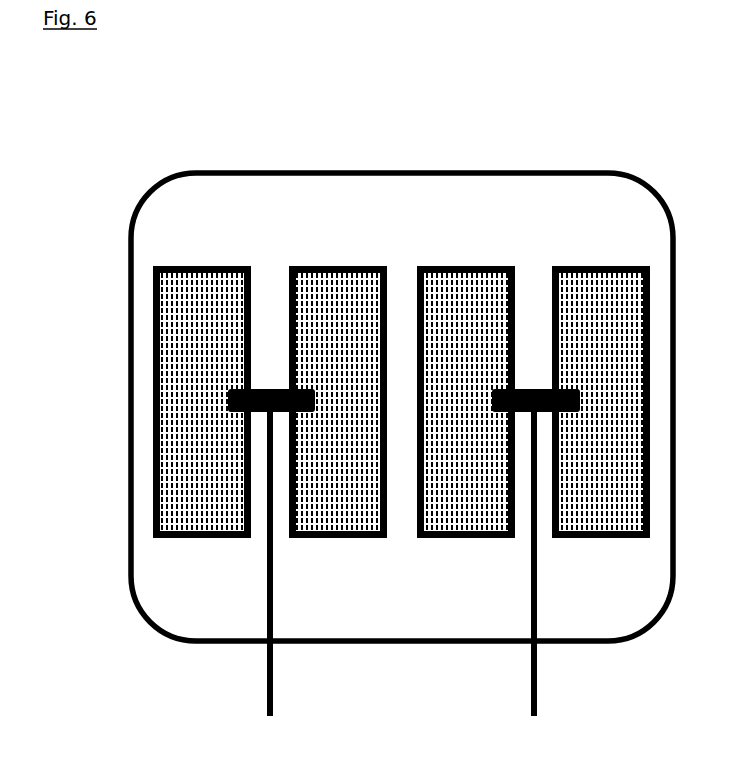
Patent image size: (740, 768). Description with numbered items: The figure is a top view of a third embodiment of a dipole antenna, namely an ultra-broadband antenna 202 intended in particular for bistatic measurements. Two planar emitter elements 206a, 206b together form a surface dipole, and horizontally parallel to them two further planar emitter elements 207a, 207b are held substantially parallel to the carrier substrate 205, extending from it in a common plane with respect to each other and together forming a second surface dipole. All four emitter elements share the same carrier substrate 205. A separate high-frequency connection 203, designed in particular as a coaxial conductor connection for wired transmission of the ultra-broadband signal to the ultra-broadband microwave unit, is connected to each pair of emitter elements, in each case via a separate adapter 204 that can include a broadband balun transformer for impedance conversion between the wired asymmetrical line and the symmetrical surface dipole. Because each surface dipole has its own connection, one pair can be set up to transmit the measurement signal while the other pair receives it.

The ultra-broadband antenna 202 is at (354, 139).
The high-frequency connection 203 is at (532, 673).
The adapter 204 is at (277, 388).
The carrier substrate 205 is at (227, 648).
The planar emitter element 206a is at (202, 265).
The planar emitter element 206b is at (343, 264).
The further planar emitter element 207a is at (468, 264).
The further planar emitter element 207b is at (632, 264).